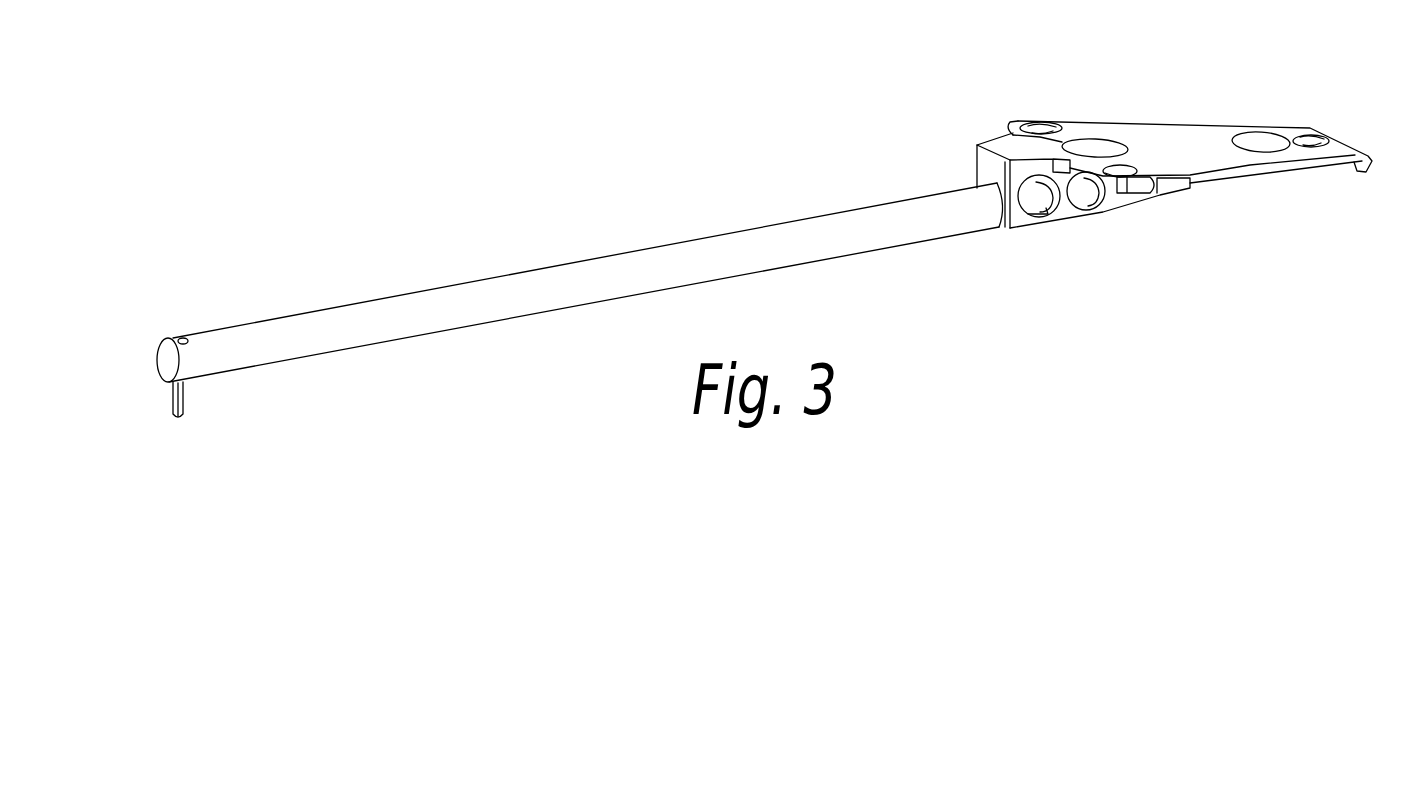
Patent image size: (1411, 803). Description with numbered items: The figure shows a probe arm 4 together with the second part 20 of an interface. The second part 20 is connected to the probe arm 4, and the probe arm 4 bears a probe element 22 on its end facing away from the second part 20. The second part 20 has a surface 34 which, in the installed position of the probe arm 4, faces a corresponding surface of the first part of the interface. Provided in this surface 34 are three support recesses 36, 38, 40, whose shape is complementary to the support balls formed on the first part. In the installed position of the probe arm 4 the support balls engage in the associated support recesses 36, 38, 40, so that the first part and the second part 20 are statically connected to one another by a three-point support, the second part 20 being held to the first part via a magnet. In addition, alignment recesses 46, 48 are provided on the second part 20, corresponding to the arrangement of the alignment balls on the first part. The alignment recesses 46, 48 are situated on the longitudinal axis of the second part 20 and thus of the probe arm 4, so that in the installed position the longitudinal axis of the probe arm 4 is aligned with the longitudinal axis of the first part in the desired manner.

The probe arm 4 is at (562, 260).
The probe element 22 is at (185, 403).
The second part 20 is at (1182, 135).
The surface 34 is at (1202, 160).
The support recess 36 is at (1039, 128).
The alignment recess 46 is at (1090, 150).
The alignment recess 48 is at (1255, 145).
The support recess 40 is at (1317, 143).
The support recess 38 is at (1120, 172).